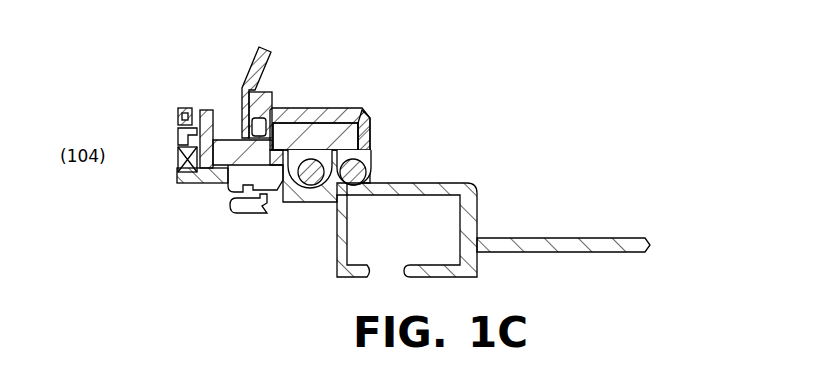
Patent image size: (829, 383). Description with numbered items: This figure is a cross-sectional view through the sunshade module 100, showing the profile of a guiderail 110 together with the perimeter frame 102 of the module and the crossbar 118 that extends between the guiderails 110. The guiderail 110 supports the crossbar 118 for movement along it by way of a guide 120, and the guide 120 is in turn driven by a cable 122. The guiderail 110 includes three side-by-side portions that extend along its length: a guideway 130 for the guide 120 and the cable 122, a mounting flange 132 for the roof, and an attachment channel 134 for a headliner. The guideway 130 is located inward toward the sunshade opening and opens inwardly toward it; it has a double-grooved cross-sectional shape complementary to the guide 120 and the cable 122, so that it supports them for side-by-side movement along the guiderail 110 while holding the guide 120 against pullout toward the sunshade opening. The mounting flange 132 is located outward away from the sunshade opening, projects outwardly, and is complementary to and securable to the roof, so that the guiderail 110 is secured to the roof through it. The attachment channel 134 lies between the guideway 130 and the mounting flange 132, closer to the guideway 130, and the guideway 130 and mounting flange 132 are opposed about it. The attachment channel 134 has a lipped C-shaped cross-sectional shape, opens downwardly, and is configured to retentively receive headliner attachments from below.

The sunshade module 100 is at (281, 98).
The perimeter frame 102 is at (299, 98).
The guiderail 110 is at (320, 112).
The crossbar 118 is at (185, 108).
The guide 120 is at (368, 115).
The cable 122 is at (350, 161).
The guideway 130 is at (338, 112).
The mounting flange 132 is at (500, 238).
The attachment channel 134 is at (440, 182).